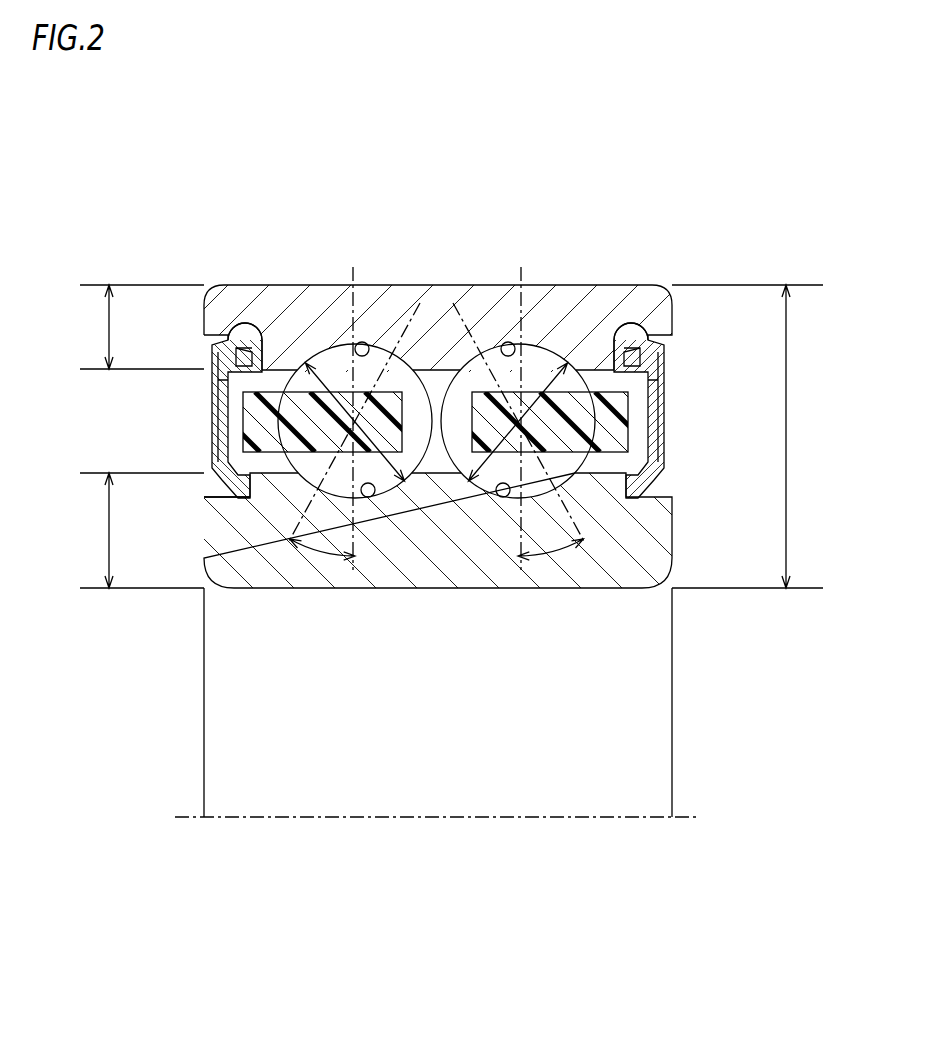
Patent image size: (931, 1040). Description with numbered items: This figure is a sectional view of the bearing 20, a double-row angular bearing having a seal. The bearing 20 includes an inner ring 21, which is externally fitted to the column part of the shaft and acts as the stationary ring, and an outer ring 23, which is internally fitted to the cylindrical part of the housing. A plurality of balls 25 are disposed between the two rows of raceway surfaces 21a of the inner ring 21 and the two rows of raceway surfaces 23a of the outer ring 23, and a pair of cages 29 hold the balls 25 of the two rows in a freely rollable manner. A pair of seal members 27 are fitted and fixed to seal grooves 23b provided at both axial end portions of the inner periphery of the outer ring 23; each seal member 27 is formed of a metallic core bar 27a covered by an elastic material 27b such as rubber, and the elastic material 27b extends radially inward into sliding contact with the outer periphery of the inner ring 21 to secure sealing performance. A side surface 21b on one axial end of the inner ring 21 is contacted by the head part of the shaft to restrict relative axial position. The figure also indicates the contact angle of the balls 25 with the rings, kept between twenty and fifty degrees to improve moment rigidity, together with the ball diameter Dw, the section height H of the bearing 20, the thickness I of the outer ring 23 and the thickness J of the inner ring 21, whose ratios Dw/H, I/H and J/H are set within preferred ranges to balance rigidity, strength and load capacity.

The bearing 20 is at (188, 227).
The inner ring 21 is at (440, 555).
The raceway surfaces 21a is at (392, 497).
The side surface 21b is at (206, 503).
The outer ring 23 is at (450, 312).
The raceway surfaces 23a is at (363, 343).
The seal grooves 23b is at (238, 335).
The balls 25 is at (313, 470).
The seal members 27 is at (200, 434).
The metallic core bar 27a is at (216, 383).
The elastic material 27b is at (214, 348).
The cages 29 is at (288, 392).
The ball diameter Dw is at (533, 345).
The section height H is at (800, 425).
The thickness of the outer ring I is at (92, 331).
The thickness of the inner ring J is at (91, 533).